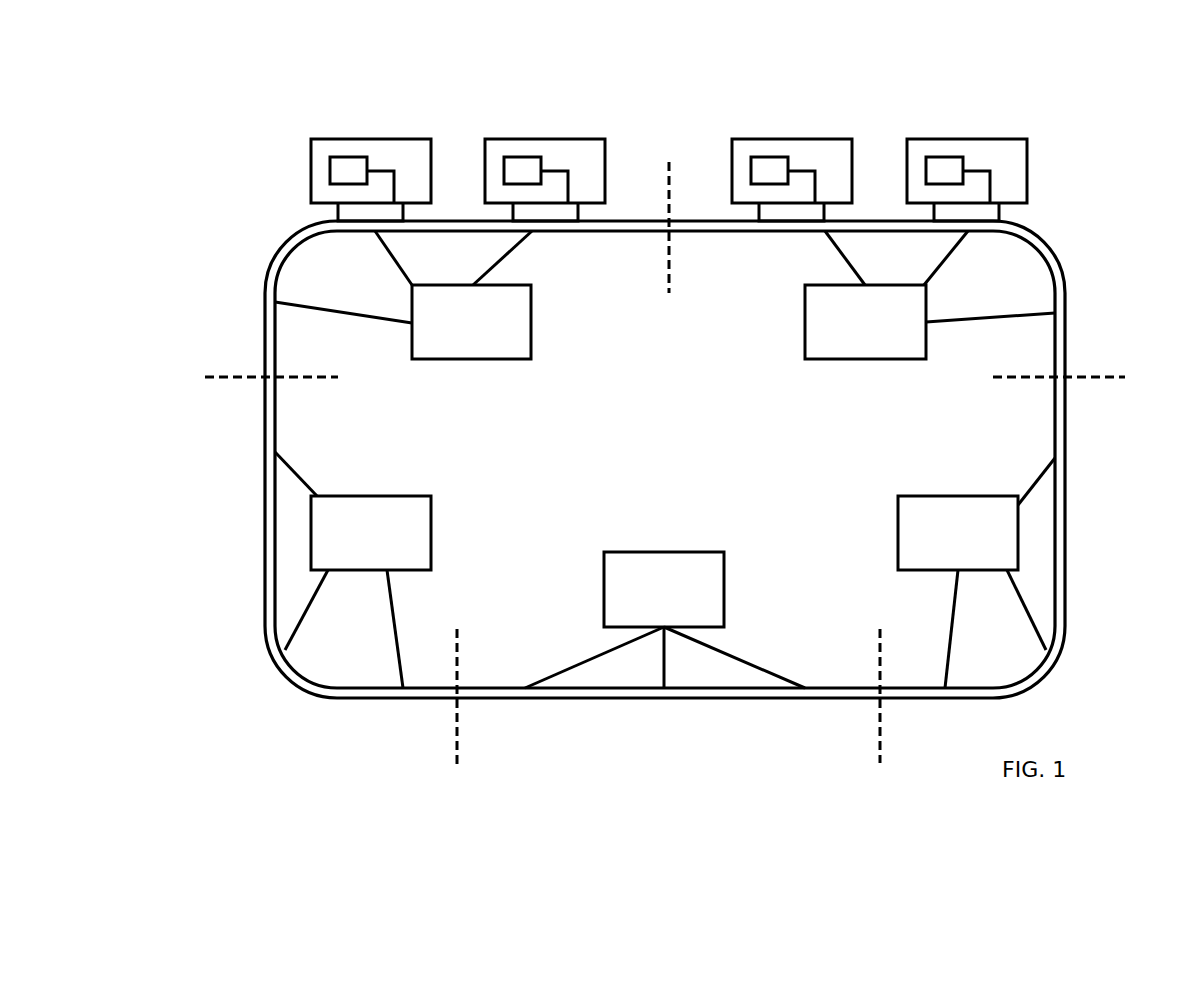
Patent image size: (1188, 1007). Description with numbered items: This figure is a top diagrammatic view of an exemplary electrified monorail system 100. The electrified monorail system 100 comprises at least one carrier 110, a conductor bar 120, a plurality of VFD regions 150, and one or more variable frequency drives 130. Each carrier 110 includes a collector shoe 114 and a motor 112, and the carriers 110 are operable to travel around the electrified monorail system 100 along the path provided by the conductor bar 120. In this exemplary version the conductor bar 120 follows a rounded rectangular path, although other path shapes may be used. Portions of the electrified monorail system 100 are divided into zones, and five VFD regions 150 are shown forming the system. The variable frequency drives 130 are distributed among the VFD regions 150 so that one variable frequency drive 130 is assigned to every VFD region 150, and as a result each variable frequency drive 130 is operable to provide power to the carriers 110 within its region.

The electrified monorail system 100 is at (897, 88).
The carrier 110 is at (317, 134).
The motor 112 is at (352, 165).
The collector shoe 114 is at (385, 212).
The conductor bar 120 is at (287, 245).
The variable frequency drive 130 is at (548, 332).
The VFD region 150 is at (562, 125).